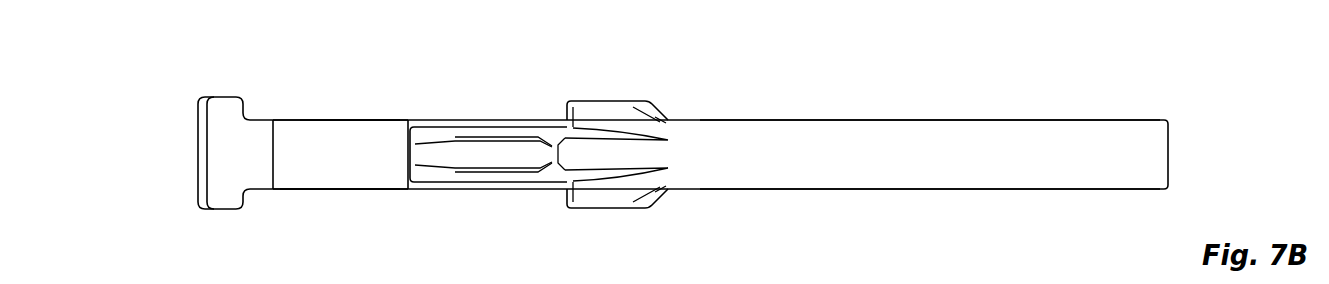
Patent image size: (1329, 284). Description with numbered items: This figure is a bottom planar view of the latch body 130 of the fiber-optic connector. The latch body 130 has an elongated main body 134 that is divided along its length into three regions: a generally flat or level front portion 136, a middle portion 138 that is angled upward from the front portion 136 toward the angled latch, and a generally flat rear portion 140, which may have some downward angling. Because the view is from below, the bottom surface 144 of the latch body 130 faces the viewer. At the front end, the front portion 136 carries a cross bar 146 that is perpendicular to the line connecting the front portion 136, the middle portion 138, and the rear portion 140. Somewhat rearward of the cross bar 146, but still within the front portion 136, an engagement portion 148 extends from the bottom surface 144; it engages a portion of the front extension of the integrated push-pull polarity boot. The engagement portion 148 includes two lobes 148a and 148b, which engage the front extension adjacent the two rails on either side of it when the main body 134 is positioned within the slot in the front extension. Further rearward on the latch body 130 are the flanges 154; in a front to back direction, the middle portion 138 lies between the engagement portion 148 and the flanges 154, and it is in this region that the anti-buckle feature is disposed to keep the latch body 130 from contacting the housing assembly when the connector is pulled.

The latch body 130 is at (1047, 84).
The main body 134 is at (855, 190).
The front portion 136 is at (418, 57).
The middle portion 138 is at (422, 57).
The rear portion 140 is at (1172, 57).
The bottom surface 144 is at (894, 158).
The cross bar 146 is at (223, 210).
The engagement portion 148 is at (381, 170).
The lobe 148a is at (367, 118).
The lobe 148b is at (302, 190).
The flanges 154 is at (612, 101).